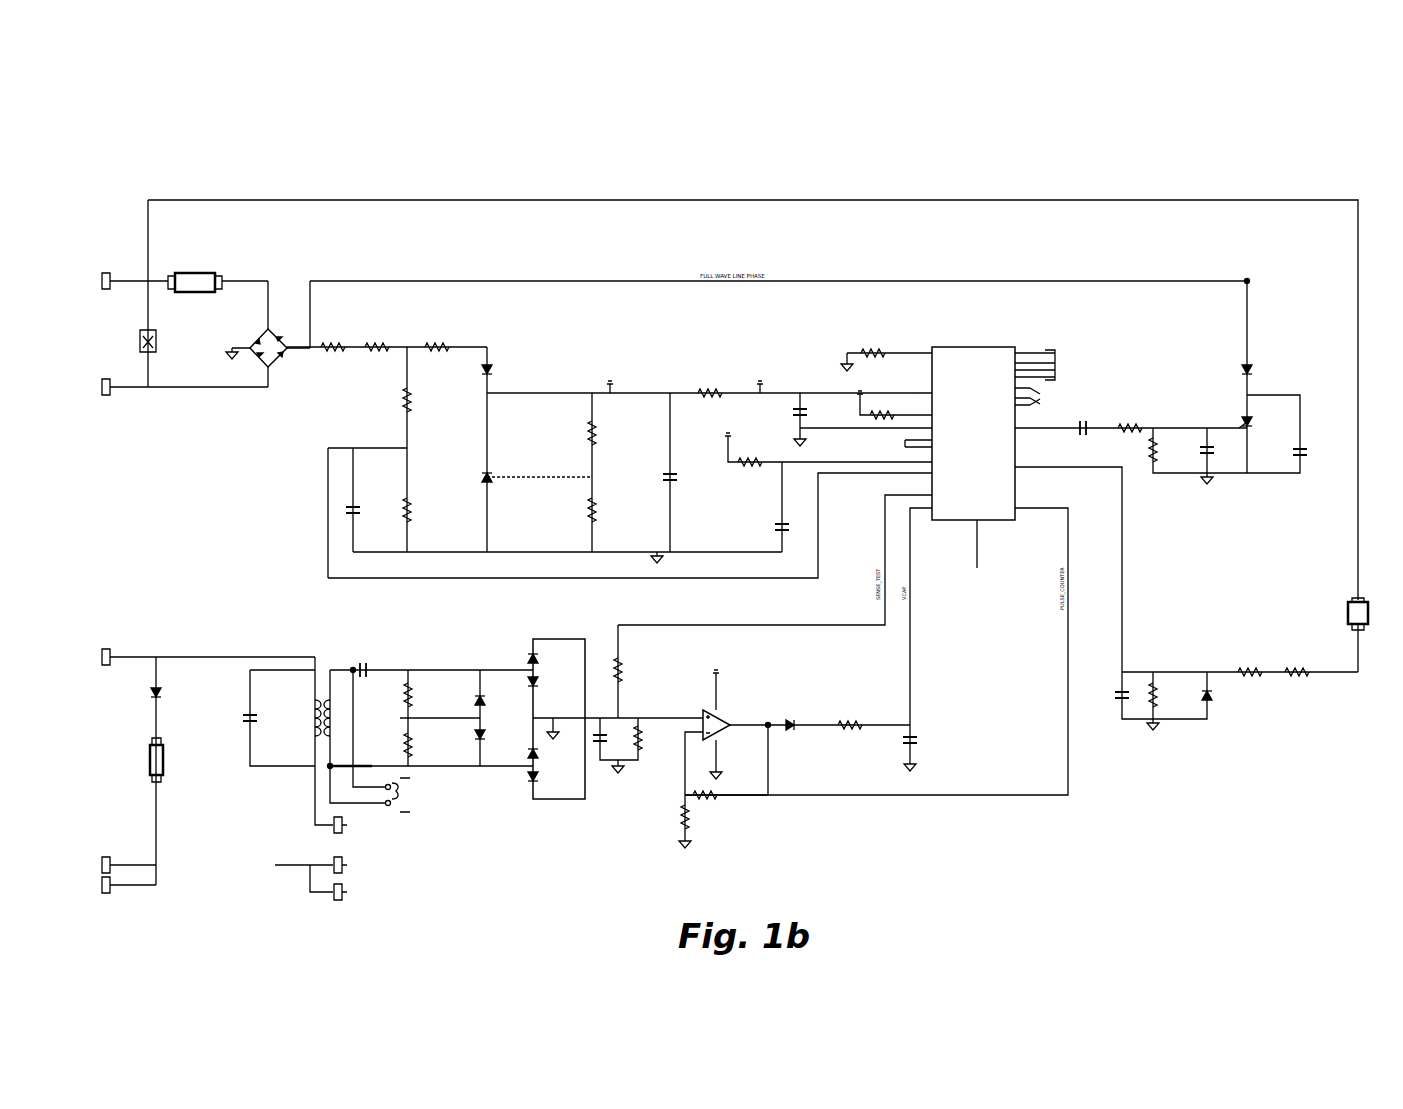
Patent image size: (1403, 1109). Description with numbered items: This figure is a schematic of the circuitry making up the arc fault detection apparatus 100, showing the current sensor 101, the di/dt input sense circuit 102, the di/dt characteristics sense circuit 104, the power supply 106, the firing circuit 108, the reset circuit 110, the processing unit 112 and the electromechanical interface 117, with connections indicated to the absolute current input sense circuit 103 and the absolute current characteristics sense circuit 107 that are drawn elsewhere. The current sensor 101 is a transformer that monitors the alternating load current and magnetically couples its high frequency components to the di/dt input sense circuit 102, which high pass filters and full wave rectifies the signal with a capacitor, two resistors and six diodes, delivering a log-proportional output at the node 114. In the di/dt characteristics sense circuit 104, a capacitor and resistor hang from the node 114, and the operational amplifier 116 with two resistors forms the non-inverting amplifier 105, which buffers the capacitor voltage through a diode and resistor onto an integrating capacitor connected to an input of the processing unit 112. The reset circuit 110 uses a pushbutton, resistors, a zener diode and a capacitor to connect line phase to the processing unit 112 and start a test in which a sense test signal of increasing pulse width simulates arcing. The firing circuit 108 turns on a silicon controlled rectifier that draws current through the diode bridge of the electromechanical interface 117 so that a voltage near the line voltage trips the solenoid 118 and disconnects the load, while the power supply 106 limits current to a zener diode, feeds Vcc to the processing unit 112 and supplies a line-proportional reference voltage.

The arc fault detection apparatus 100 is at (1190, 145).
The current sensor 101 is at (306, 642).
The differential current (di/dt) input sense circuit 102 is at (516, 642).
The absolute current input sense circuit 103 is at (470, 847).
The di/dt characteristics sense circuit 104 is at (741, 833).
The non-inverting amplifier 105 is at (723, 662).
The power supply 106 is at (572, 354).
The absolute current characteristics sense circuit 107 is at (987, 634).
The tripping (firing) circuit 108 is at (1158, 366).
The reset circuit 110 is at (1177, 627).
The processing unit 112 is at (970, 347).
The node 114 is at (587, 714).
The operational amplifier 116 is at (729, 719).
The electromechanical interface 117 is at (270, 251).
The solenoid 118 is at (216, 273).